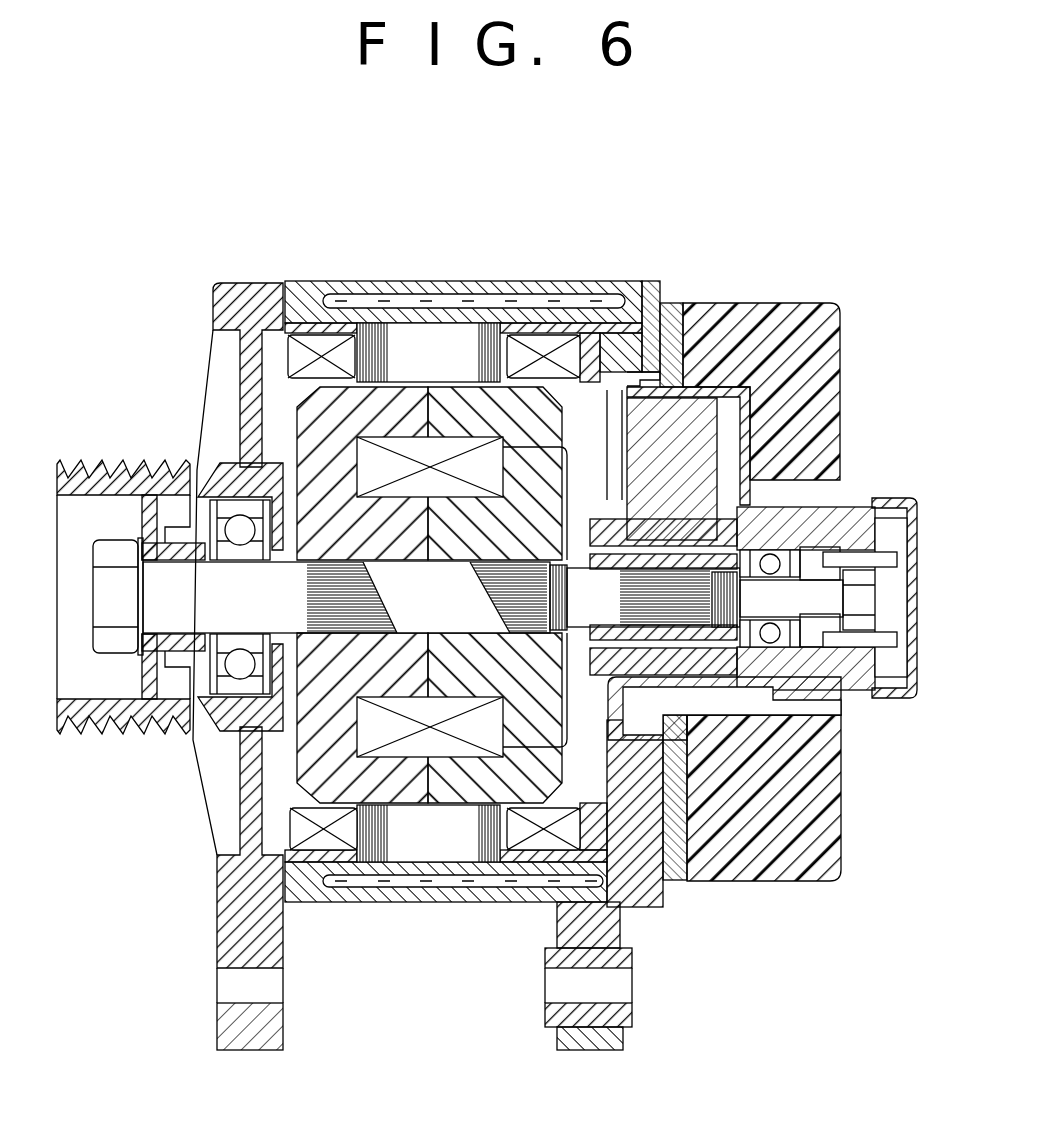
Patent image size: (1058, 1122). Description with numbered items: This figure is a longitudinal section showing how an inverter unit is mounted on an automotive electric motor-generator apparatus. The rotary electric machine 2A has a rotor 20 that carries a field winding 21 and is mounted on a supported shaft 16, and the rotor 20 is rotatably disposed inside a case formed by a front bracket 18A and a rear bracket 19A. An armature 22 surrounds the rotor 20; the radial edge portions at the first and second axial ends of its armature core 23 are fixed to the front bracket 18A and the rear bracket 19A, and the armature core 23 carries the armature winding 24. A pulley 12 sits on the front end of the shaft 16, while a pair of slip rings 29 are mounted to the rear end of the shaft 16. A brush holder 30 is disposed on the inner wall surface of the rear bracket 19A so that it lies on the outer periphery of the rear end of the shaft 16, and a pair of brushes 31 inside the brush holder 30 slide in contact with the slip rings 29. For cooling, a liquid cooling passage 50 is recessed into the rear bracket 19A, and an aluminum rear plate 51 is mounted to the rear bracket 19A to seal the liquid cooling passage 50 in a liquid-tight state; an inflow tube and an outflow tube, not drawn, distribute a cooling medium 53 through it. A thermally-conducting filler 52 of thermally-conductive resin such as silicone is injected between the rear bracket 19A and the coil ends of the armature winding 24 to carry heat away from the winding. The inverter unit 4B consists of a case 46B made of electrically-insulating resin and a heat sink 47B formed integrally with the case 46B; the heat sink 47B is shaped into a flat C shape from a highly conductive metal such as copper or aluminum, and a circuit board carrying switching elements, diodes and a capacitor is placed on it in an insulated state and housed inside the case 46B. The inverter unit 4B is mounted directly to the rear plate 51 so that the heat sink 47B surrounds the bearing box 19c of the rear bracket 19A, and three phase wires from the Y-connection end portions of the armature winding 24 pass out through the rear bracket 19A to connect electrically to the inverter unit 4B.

The rotary electric machine 2A is at (215, 272).
The front bracket 18A is at (212, 296).
The armature 22 is at (463, 531).
The armature winding 24 is at (325, 343).
The armature core 23 is at (405, 335).
The liquid cooling passage 50 is at (463, 300).
The cooling medium 53 is at (522, 300).
The thermally-conducting filler 52 is at (610, 322).
The rear plate 51 is at (650, 285).
The inverter unit 4B is at (710, 614).
The heat sink 47B is at (675, 305).
The case 46B is at (790, 322).
The pulley 12 is at (90, 452).
The brush holder 30 is at (717, 440).
The brushes 31 is at (750, 490).
The bearing box 19c is at (842, 510).
The shaft 16 is at (173, 613).
The field winding 21 is at (370, 730).
The rotor 20 is at (286, 778).
The slip rings 29 is at (715, 660).
The rear bracket 19A is at (634, 912).